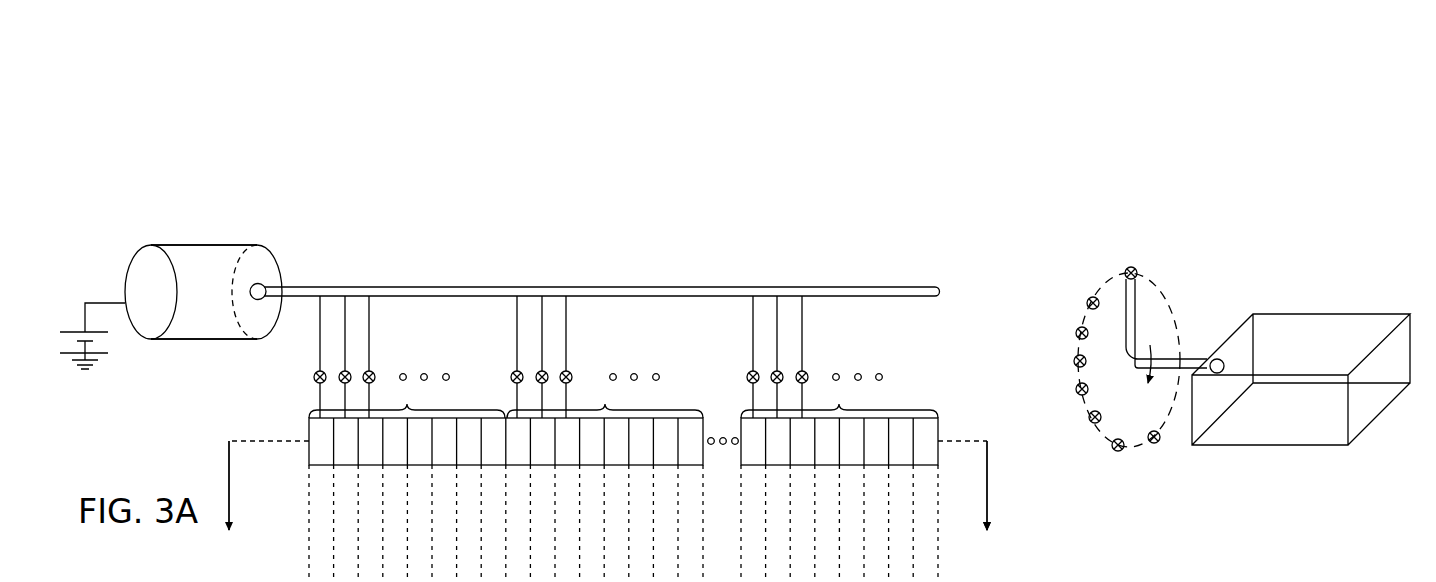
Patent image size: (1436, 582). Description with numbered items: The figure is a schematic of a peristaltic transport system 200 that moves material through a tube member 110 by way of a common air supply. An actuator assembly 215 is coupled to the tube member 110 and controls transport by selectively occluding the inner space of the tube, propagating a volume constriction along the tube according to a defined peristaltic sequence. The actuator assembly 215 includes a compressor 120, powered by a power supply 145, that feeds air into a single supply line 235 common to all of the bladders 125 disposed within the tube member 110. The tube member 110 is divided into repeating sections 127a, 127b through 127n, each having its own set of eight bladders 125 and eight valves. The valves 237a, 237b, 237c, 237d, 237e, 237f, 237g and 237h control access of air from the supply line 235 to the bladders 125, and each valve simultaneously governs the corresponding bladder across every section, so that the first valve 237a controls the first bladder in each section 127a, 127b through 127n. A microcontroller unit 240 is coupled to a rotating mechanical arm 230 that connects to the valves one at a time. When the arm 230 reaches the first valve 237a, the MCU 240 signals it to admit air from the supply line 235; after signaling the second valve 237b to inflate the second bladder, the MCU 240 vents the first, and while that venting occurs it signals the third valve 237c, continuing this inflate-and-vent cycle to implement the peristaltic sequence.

The peristaltic transport system 200 is at (1192, 72).
The actuator assembly 215 is at (170, 176).
The compressor 120 is at (220, 245).
The power supply 145 is at (75, 330).
The supply line 235 is at (678, 287).
The first valve 237a is at (315, 371).
The second valve 237b is at (349, 368).
The third valve 237c is at (374, 368).
The valve 237d is at (1074, 358).
The valve 237e is at (1076, 389).
The valve 237f is at (1090, 422).
The valve 237g is at (1113, 450).
The valve 237h is at (1154, 444).
The tube member 110 is at (299, 429).
The bladders 125 is at (316, 450).
The first repeating section 127a is at (407, 401).
The second repeating section 127b is at (605, 402).
The nth repeating section 127n is at (839, 402).
The rotating mechanical arm 230 is at (1138, 308).
The microcontroller unit 240 is at (1305, 313).